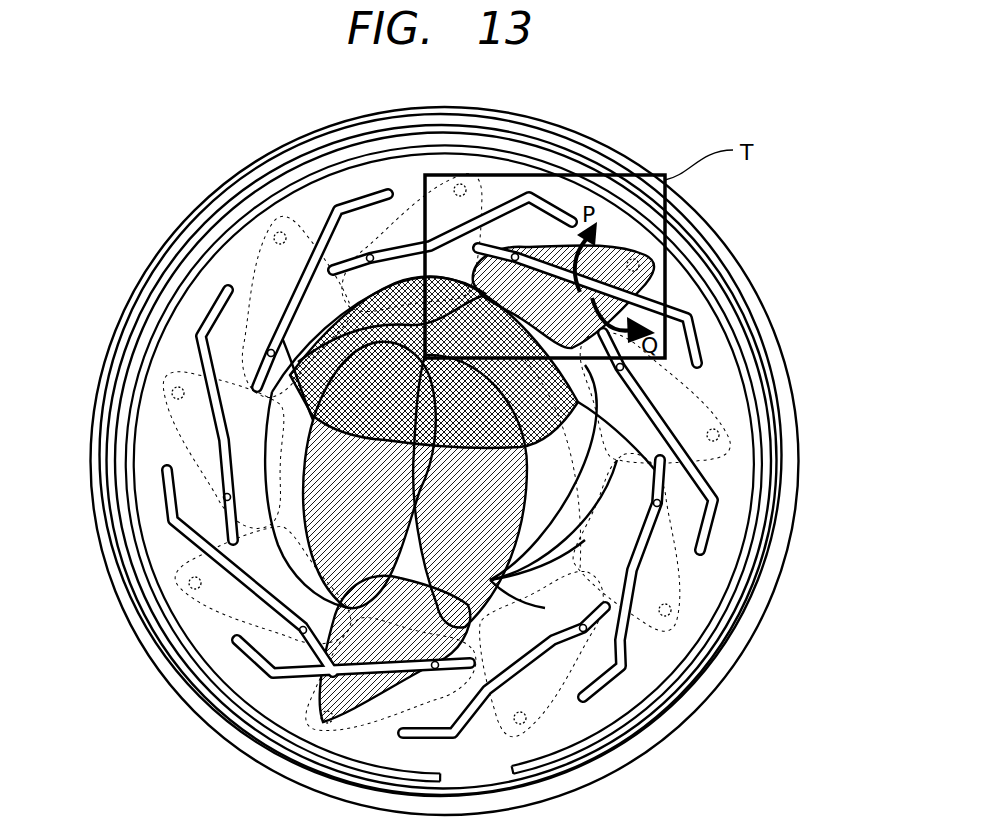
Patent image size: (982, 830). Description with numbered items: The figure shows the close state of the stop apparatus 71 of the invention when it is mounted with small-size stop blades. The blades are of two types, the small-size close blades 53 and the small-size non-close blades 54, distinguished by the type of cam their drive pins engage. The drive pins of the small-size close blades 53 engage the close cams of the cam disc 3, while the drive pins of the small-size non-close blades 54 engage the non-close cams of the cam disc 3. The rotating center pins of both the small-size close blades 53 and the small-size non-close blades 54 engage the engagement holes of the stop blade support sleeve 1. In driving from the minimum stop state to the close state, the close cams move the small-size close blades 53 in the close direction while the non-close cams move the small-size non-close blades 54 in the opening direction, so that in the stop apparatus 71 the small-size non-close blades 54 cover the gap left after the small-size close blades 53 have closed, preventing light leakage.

The stop blade support sleeve 1 is at (762, 331).
The cam disc 3 is at (762, 455).
The stop apparatus 71 is at (790, 288).
The small-size close blades 53 is at (262, 267).
The small-size non-close blades 54 is at (403, 200).